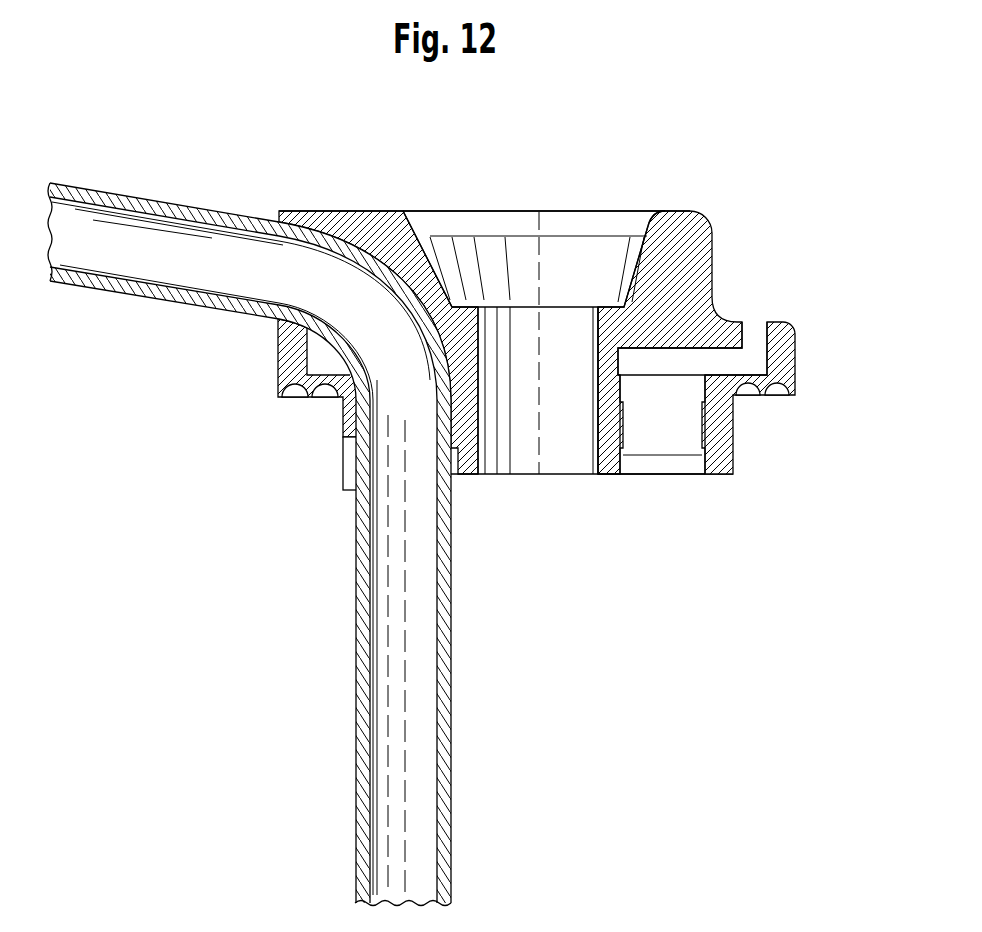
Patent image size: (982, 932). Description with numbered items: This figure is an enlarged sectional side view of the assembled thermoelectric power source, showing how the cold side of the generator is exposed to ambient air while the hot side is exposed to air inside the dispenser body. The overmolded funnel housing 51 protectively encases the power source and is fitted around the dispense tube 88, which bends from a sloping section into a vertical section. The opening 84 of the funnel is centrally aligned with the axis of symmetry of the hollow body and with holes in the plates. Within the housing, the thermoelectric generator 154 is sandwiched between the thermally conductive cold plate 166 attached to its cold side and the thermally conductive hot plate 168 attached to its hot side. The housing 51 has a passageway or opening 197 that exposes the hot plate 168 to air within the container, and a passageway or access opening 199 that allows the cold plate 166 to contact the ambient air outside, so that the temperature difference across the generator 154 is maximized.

The funnel housing 51 is at (680, 226).
The opening of the funnel 84 is at (520, 226).
The dispense tube 88 is at (357, 593).
The thermoelectric generator 154 is at (682, 428).
The cold plate 166 is at (753, 355).
The hot plate 168 is at (682, 477).
The passageway or opening 197 is at (615, 476).
The passageway or access opening 199 is at (751, 322).